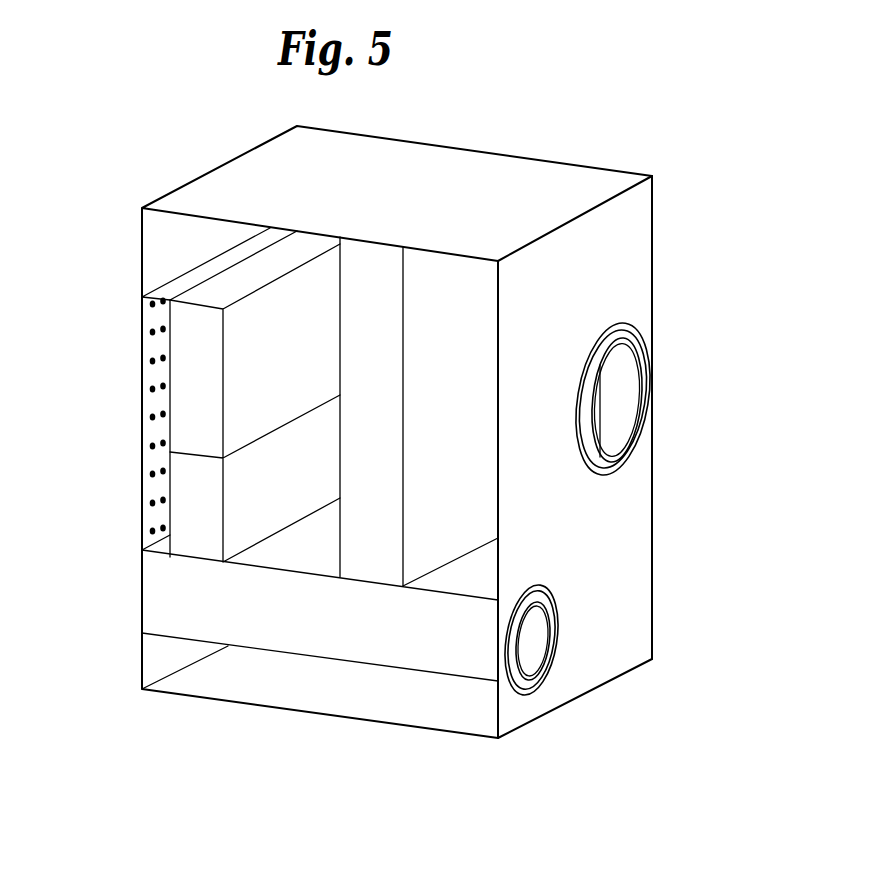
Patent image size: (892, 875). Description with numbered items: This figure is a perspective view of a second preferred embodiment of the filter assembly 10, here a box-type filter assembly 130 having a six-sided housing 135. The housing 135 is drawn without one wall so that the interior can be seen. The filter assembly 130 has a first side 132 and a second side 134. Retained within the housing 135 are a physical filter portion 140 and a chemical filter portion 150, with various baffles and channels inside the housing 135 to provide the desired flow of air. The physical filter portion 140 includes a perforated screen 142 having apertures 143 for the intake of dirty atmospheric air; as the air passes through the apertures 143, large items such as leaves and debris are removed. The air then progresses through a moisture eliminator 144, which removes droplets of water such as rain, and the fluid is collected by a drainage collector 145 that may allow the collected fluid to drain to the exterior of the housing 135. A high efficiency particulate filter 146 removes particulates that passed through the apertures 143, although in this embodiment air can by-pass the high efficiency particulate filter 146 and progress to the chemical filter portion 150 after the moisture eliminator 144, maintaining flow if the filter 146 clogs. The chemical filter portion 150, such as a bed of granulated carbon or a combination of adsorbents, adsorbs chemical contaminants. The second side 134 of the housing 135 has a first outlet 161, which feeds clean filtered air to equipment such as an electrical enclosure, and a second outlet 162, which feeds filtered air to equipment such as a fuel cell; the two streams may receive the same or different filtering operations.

The filter assembly 10 is at (645, 148).
The box-type filter assembly 130 is at (692, 202).
The first side 132 is at (140, 330).
The second side 134 is at (652, 442).
The housing 135 is at (652, 278).
The physical filter portion 140 is at (140, 412).
The perforated screen 142 is at (152, 493).
The apertures 143 is at (150, 512).
The moisture eliminator 144 is at (210, 306).
The drainage collector 145 is at (193, 560).
The high efficiency particulate filter 146 is at (405, 287).
The chemical filter portion 150 is at (330, 662).
The first outlet 161 is at (615, 477).
The second outlet 162 is at (540, 685).